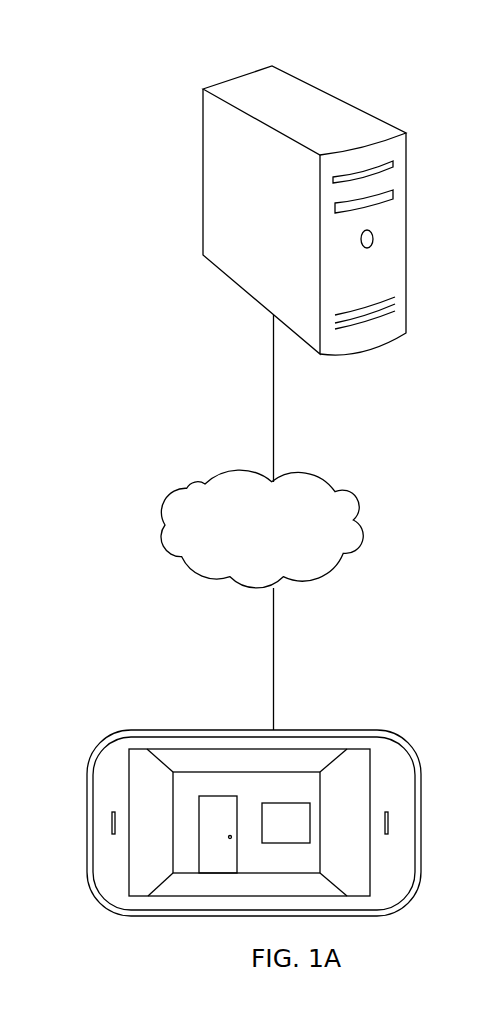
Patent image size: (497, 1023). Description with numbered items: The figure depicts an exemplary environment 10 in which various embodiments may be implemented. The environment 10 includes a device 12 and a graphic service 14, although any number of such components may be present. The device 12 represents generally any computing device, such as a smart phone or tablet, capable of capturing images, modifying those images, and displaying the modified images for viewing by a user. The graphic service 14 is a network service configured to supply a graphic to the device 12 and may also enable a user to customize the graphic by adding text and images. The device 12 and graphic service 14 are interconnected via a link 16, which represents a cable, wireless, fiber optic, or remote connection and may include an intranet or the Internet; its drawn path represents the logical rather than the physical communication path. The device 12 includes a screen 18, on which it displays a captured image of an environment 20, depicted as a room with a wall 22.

The environment 10 is at (157, 78).
The device 12 is at (197, 730).
The graphic service 14 is at (352, 121).
The link 16 is at (303, 472).
The screen 18 is at (227, 897).
The environment 20 is at (318, 760).
The wall 22 is at (180, 819).